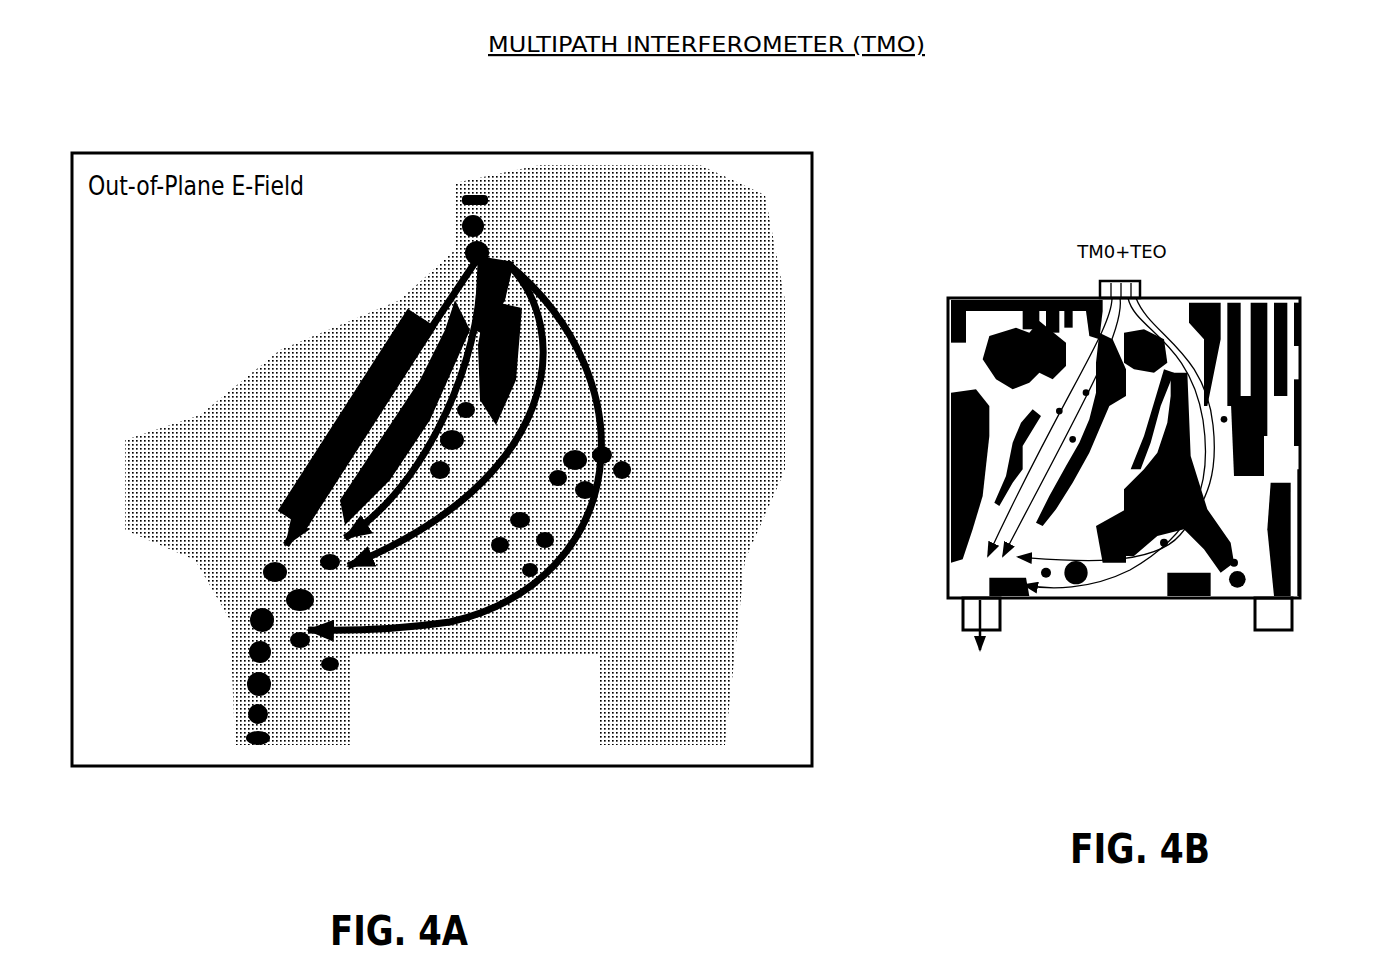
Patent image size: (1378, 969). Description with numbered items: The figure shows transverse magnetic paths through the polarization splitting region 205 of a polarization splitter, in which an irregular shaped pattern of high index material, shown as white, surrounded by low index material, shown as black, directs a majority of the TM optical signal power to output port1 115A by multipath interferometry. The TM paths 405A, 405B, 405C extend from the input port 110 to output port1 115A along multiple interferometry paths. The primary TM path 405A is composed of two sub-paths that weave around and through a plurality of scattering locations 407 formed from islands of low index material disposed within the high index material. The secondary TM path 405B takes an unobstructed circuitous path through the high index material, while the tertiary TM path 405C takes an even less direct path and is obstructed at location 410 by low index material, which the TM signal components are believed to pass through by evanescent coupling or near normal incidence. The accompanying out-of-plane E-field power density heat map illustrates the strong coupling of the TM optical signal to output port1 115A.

In FIG. 4A, the polarization splitting region 205 is at (441, 457).
In FIG. 4B, the polarization splitting region 205 is at (948, 263).
In FIG. 4A, the primary TM path 405A is at (430, 348).
In FIG. 4A, the secondary TM path 405B is at (433, 538).
In FIG. 4A, the tertiary TM path 405C is at (522, 605).
In FIG. 4B, the input port 110 is at (1143, 292).
In FIG. 4B, the output port1 115A is at (1003, 616).
In FIG. 4B, the scattering location 407 is at (1052, 400).
In FIG. 4B, the location 410 is at (1216, 504).